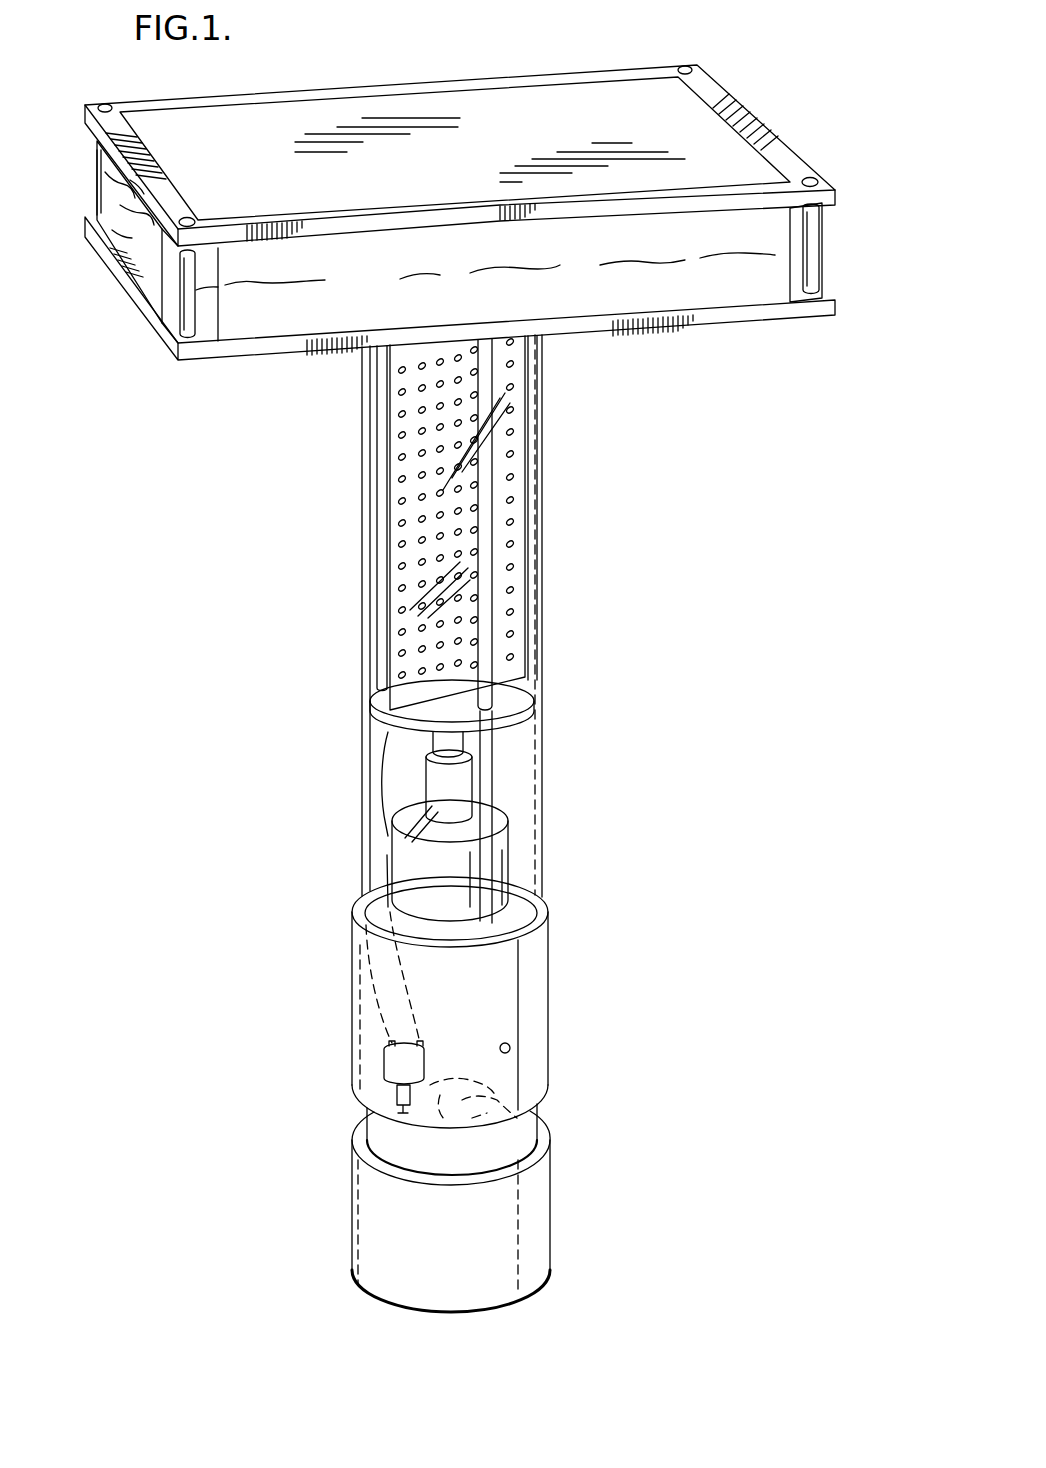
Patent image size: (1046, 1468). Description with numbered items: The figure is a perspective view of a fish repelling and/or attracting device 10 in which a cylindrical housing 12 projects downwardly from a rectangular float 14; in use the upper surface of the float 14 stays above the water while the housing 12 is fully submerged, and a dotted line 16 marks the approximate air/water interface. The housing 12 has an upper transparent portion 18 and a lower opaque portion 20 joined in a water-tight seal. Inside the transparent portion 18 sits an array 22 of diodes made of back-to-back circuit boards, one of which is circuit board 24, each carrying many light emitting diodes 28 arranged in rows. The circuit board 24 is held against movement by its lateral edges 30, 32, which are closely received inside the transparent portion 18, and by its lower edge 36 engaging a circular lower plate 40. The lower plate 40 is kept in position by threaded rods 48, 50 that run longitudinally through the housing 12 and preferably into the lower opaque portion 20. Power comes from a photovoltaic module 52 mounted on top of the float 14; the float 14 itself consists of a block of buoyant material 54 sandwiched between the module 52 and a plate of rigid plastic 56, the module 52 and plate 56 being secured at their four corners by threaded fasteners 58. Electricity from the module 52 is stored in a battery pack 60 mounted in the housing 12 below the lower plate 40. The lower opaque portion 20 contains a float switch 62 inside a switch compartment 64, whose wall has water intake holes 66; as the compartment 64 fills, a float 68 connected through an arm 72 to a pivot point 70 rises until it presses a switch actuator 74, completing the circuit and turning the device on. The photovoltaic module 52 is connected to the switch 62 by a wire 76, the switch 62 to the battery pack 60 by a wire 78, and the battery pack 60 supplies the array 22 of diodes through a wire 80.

The fish repelling and/or attracting device 10 is at (797, 132).
The cylindrical housing 12 is at (542, 636).
The rectangular float 14 is at (830, 285).
The dotted line 16 is at (148, 248).
The upper transparent portion 18 is at (543, 769).
The lower opaque portion 20 is at (551, 995).
The array of diodes 22 is at (518, 467).
The circuit board 24 is at (516, 558).
The light emitting diodes 28 is at (398, 460).
The lateral edge 30 is at (538, 392).
The lateral edge 32 is at (378, 385).
The lower edge 36 is at (538, 682).
The lower plate 40 is at (538, 712).
The threaded rod 48 is at (490, 591).
The threaded rod 50 is at (425, 748).
The photovoltaic module 52 is at (538, 103).
The block of buoyant material 54 is at (735, 283).
The plate of rigid plastic 56 is at (820, 316).
The threaded fasteners 58 is at (690, 69).
The battery pack 60 is at (506, 853).
The switch 62 is at (384, 1060).
The switch compartment 64 is at (542, 1067).
The water intake holes 66 is at (512, 1048).
The float 68 is at (513, 1128).
The pivot point 70 is at (363, 1147).
The arm 72 is at (440, 1070).
The switch actuator 74 is at (362, 1098).
The wire 76 is at (369, 530).
The wire 78 is at (420, 983).
The wire 80 is at (385, 804).